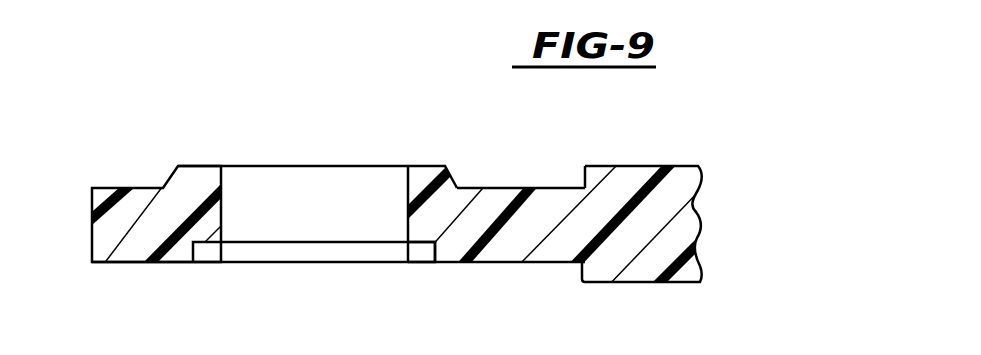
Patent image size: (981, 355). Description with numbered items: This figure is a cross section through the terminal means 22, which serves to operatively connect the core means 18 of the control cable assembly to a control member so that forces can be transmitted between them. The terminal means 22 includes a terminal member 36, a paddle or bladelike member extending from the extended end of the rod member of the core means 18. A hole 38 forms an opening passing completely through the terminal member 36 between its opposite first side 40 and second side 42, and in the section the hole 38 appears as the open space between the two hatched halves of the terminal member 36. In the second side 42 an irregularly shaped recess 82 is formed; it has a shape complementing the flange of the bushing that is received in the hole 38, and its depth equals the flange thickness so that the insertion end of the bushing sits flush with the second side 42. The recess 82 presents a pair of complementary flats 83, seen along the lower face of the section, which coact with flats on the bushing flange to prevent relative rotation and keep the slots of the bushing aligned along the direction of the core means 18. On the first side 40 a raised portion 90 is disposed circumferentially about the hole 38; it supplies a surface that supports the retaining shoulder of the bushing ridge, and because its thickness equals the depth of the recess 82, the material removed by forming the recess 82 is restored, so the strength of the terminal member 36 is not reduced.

The core means 18 is at (644, 165).
The terminal means 22 is at (494, 184).
The terminal member 36 is at (552, 188).
The hole 38 is at (407, 176).
The first side 40 is at (118, 187).
The second side 42 is at (115, 263).
The recess 82 is at (433, 250).
The flats 83 is at (357, 253).
The raised portion 90 is at (207, 166).